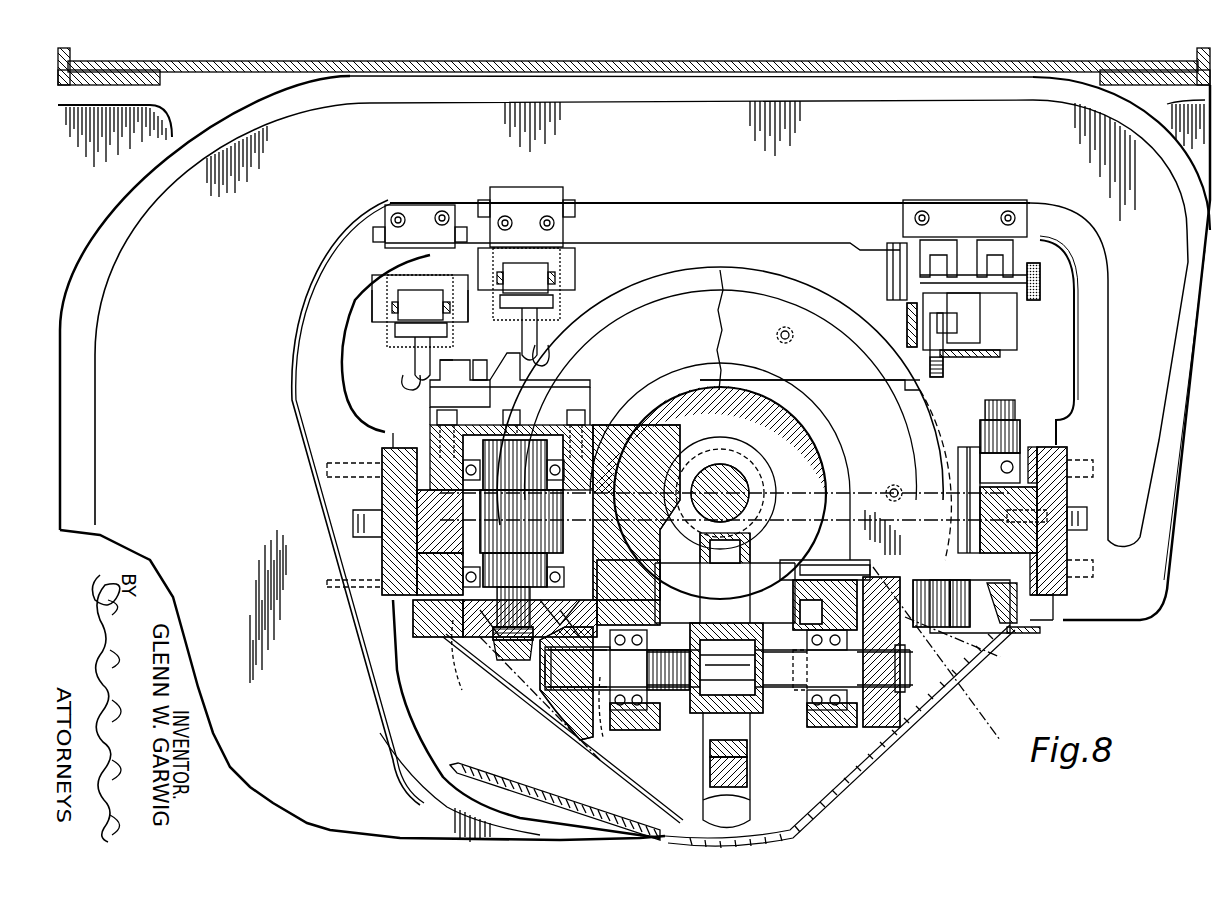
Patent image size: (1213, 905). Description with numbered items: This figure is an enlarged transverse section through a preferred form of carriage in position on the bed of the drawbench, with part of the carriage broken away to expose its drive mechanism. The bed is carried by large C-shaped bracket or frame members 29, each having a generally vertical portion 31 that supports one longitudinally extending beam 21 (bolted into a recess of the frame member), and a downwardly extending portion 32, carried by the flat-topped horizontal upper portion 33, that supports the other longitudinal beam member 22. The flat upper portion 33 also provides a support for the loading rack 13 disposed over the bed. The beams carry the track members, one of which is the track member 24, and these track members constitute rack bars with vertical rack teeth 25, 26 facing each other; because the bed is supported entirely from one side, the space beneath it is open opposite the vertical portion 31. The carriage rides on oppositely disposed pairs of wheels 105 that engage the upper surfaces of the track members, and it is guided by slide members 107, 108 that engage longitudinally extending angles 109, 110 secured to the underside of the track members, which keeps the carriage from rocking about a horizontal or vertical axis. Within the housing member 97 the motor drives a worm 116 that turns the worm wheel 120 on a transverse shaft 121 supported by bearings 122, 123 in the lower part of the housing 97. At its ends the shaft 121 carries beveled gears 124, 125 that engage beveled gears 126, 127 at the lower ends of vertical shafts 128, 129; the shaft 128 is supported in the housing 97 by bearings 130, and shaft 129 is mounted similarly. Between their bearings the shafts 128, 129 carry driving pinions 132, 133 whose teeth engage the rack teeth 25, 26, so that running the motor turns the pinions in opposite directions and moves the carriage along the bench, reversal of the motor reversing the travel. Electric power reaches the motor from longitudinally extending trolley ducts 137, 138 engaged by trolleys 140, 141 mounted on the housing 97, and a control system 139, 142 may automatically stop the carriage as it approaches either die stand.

The loading rack 13 is at (942, 62).
The longitudinally extending beam 21 is at (375, 430).
The longitudinal beam member 22 is at (1070, 445).
The track member 24 is at (1000, 475).
The rack teeth 25 is at (430, 552).
The rack teeth 26 is at (1060, 495).
The bracket or frame member 29 is at (297, 724).
The vertical portion 31 is at (347, 456).
The downwardly extending portion 32 is at (1080, 380).
The horizontal upper portion 33 is at (1005, 143).
The housing member 97 is at (985, 385).
The wheel 105 is at (1012, 398).
The slide member 107 is at (423, 637).
The slide member 108 is at (1012, 628).
The angle guide member 109 is at (398, 592).
The angle guide member 110 is at (1040, 625).
The worm 116 is at (750, 475).
The worm wheel 120 is at (757, 515).
The transverse shaft 121 is at (612, 667).
The bearing 122 is at (590, 548).
The bearing 123 is at (380, 515).
The beveled gear 124 is at (580, 717).
The beveled gear 125 is at (900, 720).
The beveled gear 126 is at (460, 640).
The beveled gear 127 is at (990, 655).
The shaft 128 is at (497, 650).
The shaft 129 is at (940, 680).
The bearing 130 is at (585, 503).
The driving pinion 132 is at (495, 503).
The driving pinion 133 is at (945, 455).
The trolley duct 137 is at (388, 328).
The trolley duct 138 is at (568, 285).
The control system 139 is at (1007, 325).
The trolley 140 is at (408, 368).
The trolley 141 is at (540, 345).
The control system 142 is at (944, 362).